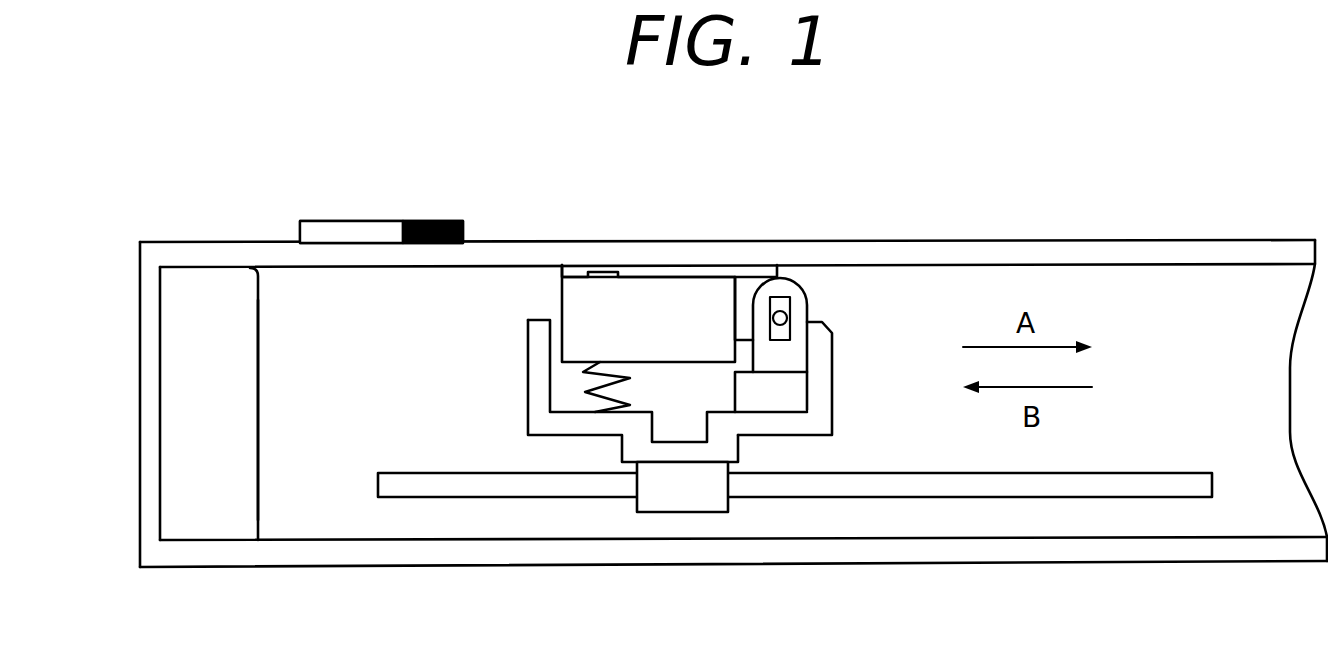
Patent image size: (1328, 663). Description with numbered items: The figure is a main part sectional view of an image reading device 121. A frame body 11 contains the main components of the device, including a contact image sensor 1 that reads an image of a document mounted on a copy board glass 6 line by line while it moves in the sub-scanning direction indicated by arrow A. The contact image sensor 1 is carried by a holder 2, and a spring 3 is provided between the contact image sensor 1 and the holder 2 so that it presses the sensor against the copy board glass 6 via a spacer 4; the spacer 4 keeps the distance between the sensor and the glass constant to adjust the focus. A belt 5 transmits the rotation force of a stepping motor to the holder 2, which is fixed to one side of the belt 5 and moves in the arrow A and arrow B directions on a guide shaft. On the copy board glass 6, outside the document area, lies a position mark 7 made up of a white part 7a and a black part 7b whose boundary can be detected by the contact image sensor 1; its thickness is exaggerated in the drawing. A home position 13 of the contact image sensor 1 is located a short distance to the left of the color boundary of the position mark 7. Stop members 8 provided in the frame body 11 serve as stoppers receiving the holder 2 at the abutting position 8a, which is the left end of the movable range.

The contact image sensor 1 is at (582, 308).
The holder 2 is at (822, 368).
The spring 3 is at (625, 376).
The spacer 4 is at (713, 264).
The belt 5 is at (908, 472).
The copy board glass 6 is at (1102, 244).
The position mark 7 is at (443, 114).
The white part 7a is at (367, 226).
The black part 7b is at (435, 220).
The stop members 8 is at (248, 498).
The abutting position 8a is at (259, 393).
The frame body 11 is at (148, 268).
The home position 13 is at (387, 239).
The image reading device 121 is at (1255, 216).